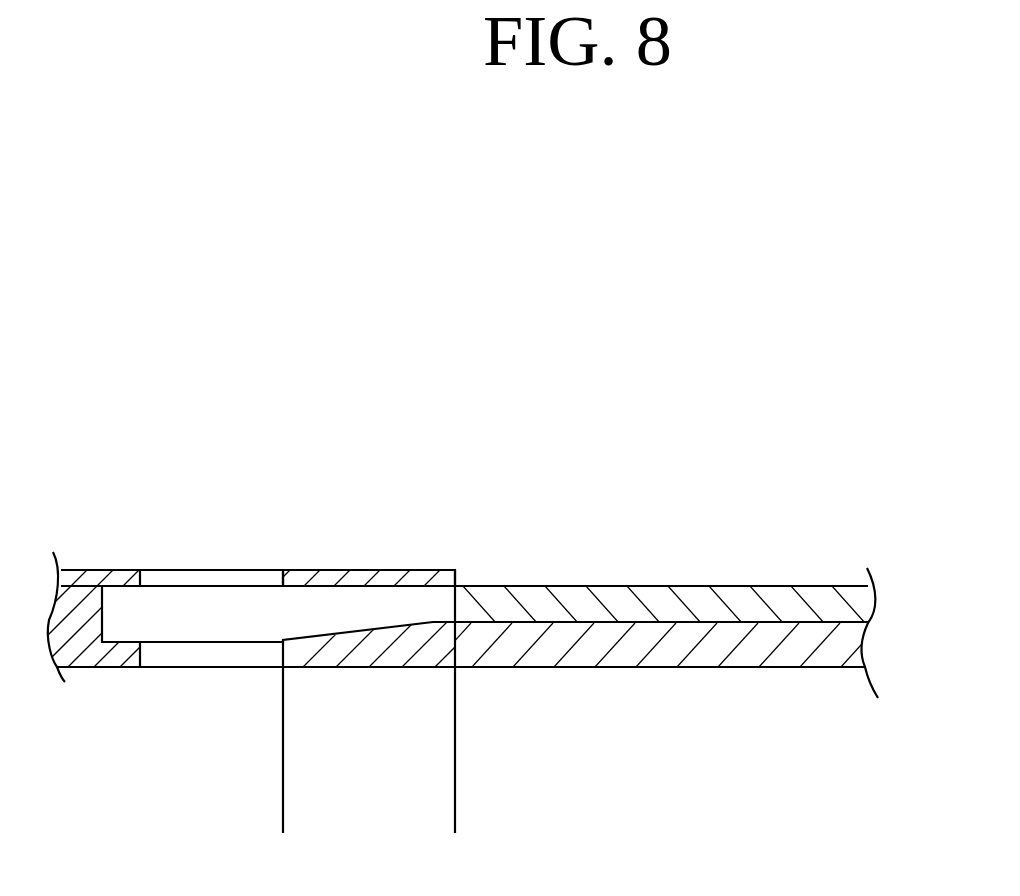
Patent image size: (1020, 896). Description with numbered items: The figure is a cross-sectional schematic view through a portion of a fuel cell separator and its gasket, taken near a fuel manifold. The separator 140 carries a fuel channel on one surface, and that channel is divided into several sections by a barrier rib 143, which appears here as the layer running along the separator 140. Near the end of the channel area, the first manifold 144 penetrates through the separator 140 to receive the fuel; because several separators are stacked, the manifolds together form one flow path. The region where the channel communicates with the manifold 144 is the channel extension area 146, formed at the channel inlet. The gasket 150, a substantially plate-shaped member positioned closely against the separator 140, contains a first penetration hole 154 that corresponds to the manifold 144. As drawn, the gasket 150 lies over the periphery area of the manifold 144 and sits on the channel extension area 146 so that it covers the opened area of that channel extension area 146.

The separator 140 is at (664, 631).
The barrier rib 143 is at (710, 612).
The first manifold 144 is at (201, 653).
The channel extension area 146 is at (455, 805).
The gasket 150 is at (337, 553).
The first penetration hole 154 is at (200, 578).